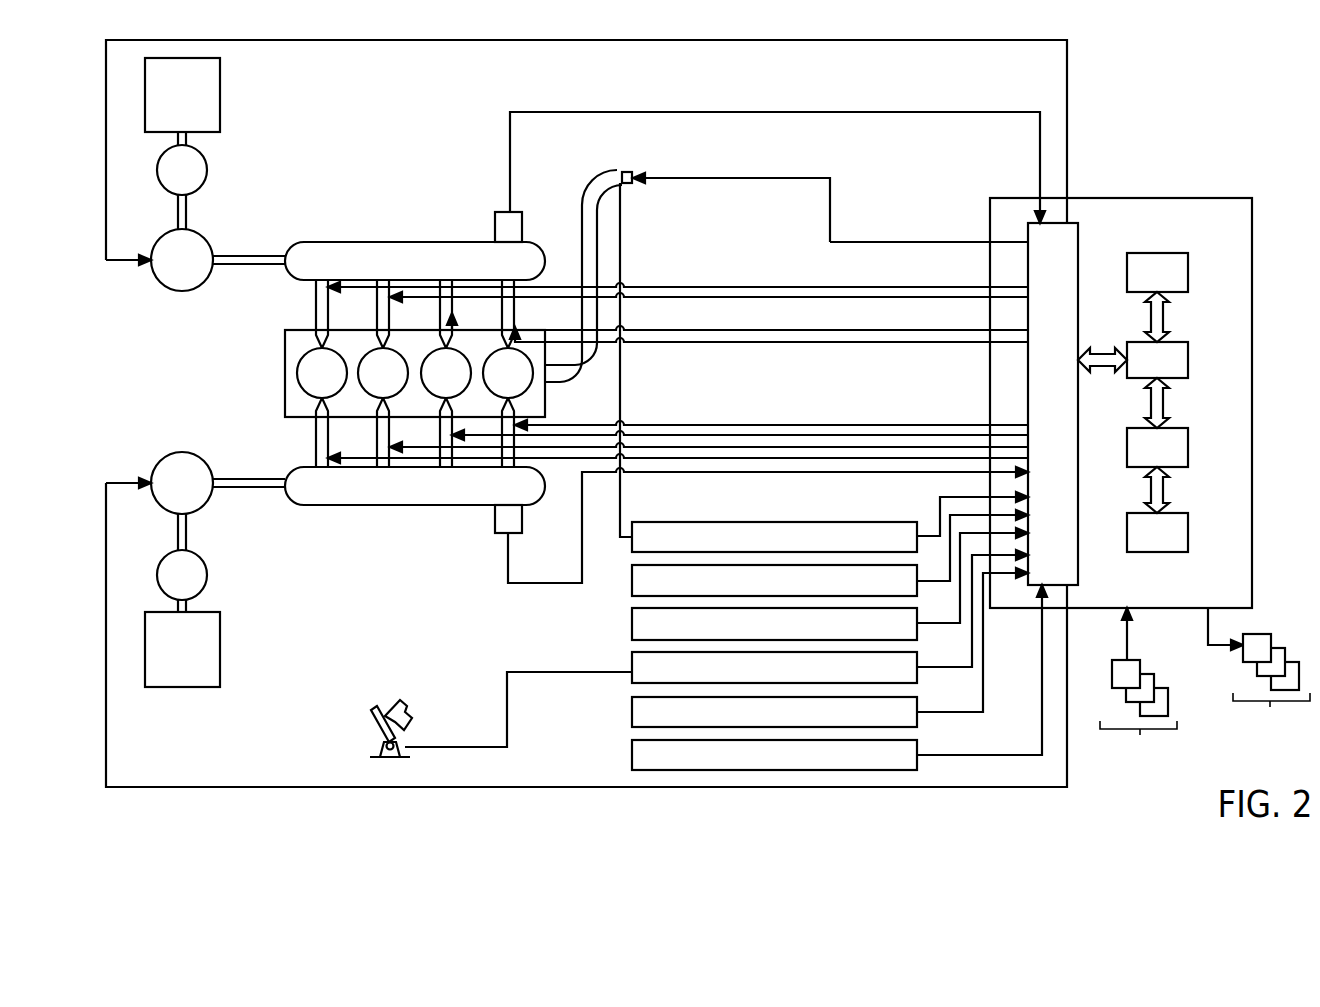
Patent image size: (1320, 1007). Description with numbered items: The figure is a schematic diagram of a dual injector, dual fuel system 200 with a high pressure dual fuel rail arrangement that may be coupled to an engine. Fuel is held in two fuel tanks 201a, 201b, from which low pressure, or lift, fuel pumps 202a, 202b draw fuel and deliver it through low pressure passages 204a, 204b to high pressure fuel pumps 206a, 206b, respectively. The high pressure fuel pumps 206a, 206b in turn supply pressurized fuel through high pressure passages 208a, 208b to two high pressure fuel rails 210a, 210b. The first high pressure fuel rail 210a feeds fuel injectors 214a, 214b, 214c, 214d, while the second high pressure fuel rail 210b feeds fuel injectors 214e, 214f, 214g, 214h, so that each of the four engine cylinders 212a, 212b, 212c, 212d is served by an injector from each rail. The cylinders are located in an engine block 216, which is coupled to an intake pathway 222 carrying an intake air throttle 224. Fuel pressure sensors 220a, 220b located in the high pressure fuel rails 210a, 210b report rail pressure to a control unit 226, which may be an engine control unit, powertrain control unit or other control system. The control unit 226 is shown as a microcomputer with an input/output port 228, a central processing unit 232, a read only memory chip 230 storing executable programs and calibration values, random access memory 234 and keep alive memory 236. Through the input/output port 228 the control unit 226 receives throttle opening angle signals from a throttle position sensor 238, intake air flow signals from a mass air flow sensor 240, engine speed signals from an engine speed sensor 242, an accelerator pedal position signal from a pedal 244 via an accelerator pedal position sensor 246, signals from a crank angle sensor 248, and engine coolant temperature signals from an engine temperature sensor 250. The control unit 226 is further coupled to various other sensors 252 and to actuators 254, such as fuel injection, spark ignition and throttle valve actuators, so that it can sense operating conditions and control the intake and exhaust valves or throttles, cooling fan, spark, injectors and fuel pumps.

The dual injector, dual fuel system 200 is at (1157, 82).
The fuel tank 201a is at (202, 105).
The fuel tank 201b is at (202, 659).
The low pressure fuel pump 202a is at (202, 180).
The low pressure fuel pump 202b is at (202, 585).
The low pressure passage 204a is at (186, 218).
The low pressure passage 204b is at (188, 528).
The high pressure fuel pump 206a is at (202, 270).
The high pressure fuel pump 206b is at (202, 493).
The high pressure passage 208a is at (240, 257).
The high pressure passage 208b is at (238, 490).
The high pressure fuel rail 210a is at (342, 270).
The high pressure fuel rail 210b is at (342, 496).
The engine cylinder 212a is at (342, 383).
The engine cylinder 212b is at (403, 383).
The engine cylinder 212c is at (466, 383).
The engine cylinder 212d is at (528, 383).
The fuel injector 214a is at (315, 293).
The fuel injector 214b is at (378, 292).
The fuel injector 214c is at (438, 292).
The fuel injector 214d is at (540, 267).
The fuel injector 214e is at (315, 455).
The fuel injector 214f is at (378, 466).
The fuel injector 214g is at (440, 466).
The fuel injector 214h is at (537, 500).
The engine block 216 is at (285, 362).
The fuel pressure sensor 220a is at (495, 224).
The fuel pressure sensor 220b is at (495, 523).
The intake pathway 222 is at (584, 200).
The intake air throttle 224 is at (622, 172).
The control unit 226 is at (1252, 400).
The input/output port 228 is at (1078, 265).
The read only memory chip 230 is at (1189, 275).
The central processing unit 232 is at (1189, 360).
The random access memory 234 is at (1189, 447).
The keep alive memory 236 is at (1189, 533).
The throttle position sensor 238 is at (778, 522).
The mass air flow sensor 240 is at (632, 581).
The engine speed sensor 242 is at (632, 624).
The pedal 244 is at (376, 720).
The accelerator pedal position sensor 246 is at (632, 660).
The crank angle sensor 248 is at (632, 712).
The engine temperature sensor 250 is at (632, 755).
The sensors 252 is at (1138, 692).
The actuators 254 is at (1263, 678).